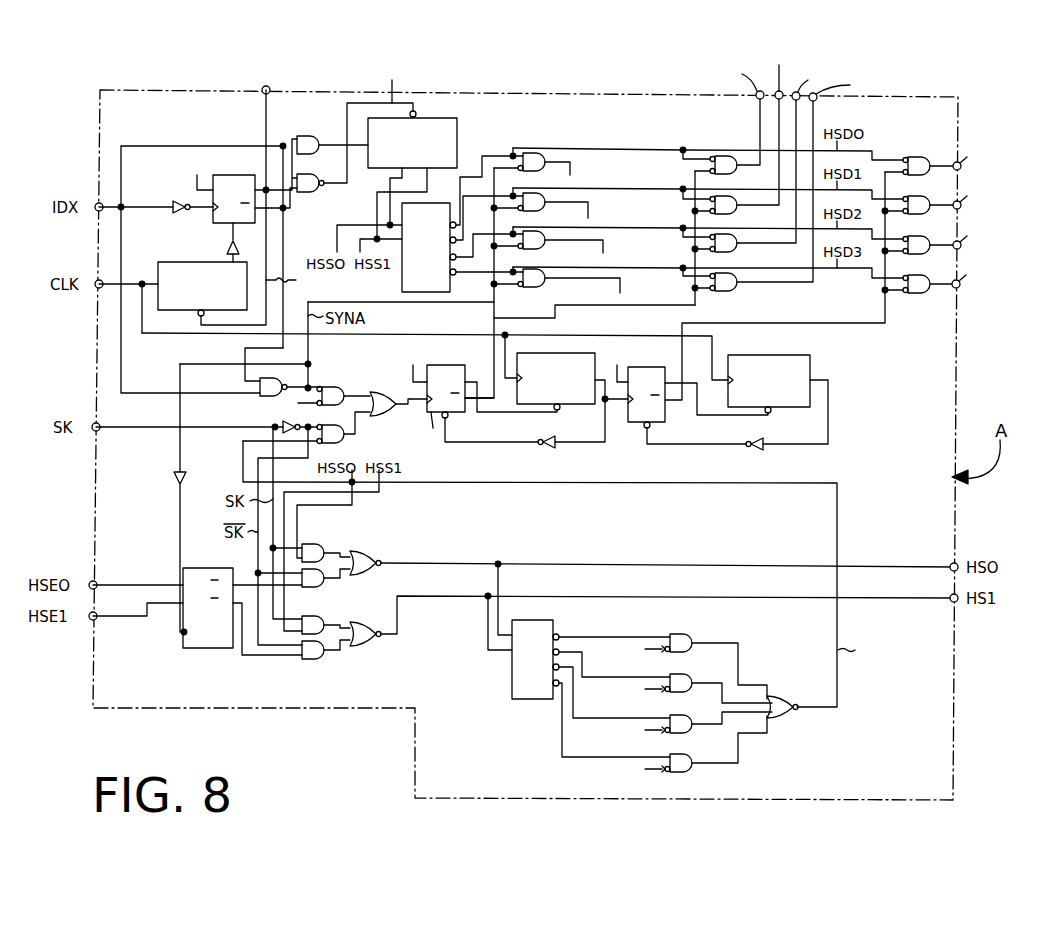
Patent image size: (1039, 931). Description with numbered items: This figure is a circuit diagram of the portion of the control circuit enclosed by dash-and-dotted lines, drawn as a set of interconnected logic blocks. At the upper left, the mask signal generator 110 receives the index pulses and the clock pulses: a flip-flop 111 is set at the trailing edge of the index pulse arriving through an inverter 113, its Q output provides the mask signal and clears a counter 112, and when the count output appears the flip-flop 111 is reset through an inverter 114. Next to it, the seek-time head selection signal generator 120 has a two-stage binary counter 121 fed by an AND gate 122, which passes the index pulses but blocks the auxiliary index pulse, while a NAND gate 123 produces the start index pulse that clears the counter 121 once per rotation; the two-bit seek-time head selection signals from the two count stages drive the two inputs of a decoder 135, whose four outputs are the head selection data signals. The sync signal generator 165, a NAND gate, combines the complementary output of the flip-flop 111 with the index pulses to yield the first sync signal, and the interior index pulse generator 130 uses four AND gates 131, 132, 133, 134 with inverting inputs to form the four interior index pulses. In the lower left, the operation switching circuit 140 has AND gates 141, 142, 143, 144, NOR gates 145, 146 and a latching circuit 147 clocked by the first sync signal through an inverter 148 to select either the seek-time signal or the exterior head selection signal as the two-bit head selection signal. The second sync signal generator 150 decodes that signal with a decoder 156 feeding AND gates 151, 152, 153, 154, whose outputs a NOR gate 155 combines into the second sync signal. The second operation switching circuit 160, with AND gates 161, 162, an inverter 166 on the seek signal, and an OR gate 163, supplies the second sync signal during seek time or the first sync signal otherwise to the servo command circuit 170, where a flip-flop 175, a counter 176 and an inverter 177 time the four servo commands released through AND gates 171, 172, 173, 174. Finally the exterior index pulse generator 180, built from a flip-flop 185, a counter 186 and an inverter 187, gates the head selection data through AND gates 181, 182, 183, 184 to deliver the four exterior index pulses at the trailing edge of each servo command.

The mask signal generator 110 is at (215, 241).
The flip-flop 111 is at (238, 175).
The counter 112 is at (158, 264).
The inverter 113 is at (183, 202).
The inverter 114 is at (226, 247).
The seek-time head selection signal generator 120 is at (377, 143).
The two-stage binary counter 121 is at (433, 118).
The AND gate 122 is at (322, 131).
The NAND gate 123 is at (306, 194).
The interior index pulse generator 130 is at (501, 256).
The AND gate 131 is at (548, 153).
The AND gate 132 is at (540, 208).
The AND gate 133 is at (543, 246).
The AND gate 134 is at (536, 288).
The decoder 135 is at (402, 281).
The operation switching circuit 140 is at (623, 600).
The AND gate 141 is at (315, 544).
The AND gate 142 is at (328, 585).
The AND gate 143 is at (328, 619).
The AND gate 144 is at (311, 659).
The NOR gate 145 is at (365, 552).
The NOR gate 146 is at (372, 642).
The latching circuit 147 is at (210, 648).
The inverter 148 is at (172, 484).
The second sync signal generator 150 is at (701, 696).
The AND gate 151 is at (693, 634).
The AND gate 152 is at (697, 674).
The AND gate 153 is at (697, 731).
The AND gate 154 is at (698, 772).
The NOR gate 155 is at (785, 697).
The decoder 156 is at (522, 699).
The second operation switching circuit 160 is at (264, 377).
The AND gate 161 is at (333, 387).
The AND gate 162 is at (348, 444).
The OR gate 163 is at (384, 389).
The sync signal generator 165 is at (256, 397).
The inverter 166 is at (286, 424).
The servo command circuit 170 is at (779, 181).
The AND gate 171 is at (730, 156).
The AND gate 172 is at (742, 209).
The AND gate 173 is at (742, 247).
The AND gate 174 is at (742, 290).
The flip-flop 175 is at (443, 420).
The counter 176 is at (575, 408).
The inverter 177 is at (549, 449).
The exterior index pulse generator 180 is at (838, 250).
The AND gate 181 is at (920, 157).
The AND gate 182 is at (922, 199).
The AND gate 183 is at (922, 239).
The AND gate 184 is at (926, 295).
The flip-flop 185 is at (632, 430).
The counter 186 is at (781, 352).
The inverter 187 is at (757, 452).